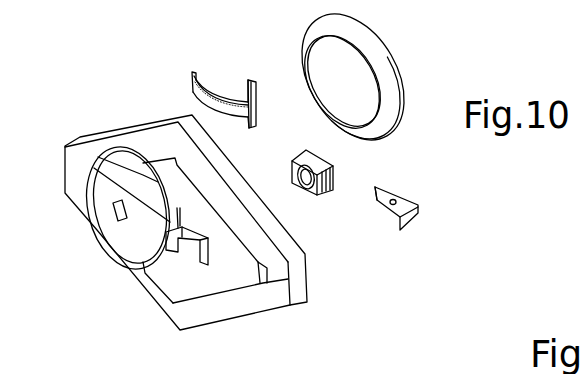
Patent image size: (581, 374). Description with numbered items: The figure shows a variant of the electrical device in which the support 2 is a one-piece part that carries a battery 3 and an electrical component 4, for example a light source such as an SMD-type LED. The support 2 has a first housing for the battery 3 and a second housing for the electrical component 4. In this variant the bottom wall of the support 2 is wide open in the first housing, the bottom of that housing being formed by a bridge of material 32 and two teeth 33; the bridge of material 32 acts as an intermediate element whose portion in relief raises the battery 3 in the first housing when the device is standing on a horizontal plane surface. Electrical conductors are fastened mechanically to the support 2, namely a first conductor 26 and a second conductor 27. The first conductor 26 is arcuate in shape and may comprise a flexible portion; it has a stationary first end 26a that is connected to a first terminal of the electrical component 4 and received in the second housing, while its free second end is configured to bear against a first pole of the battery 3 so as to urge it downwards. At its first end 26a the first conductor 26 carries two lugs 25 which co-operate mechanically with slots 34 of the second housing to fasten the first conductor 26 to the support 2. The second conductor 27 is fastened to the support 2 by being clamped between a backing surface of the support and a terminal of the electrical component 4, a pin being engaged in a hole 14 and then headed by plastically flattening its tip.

The support 2 is at (304, 283).
The battery 3 is at (380, 63).
The electrical component 4 is at (333, 180).
The hole 14 is at (393, 199).
The lugs 25 is at (247, 78).
The first conductor 26 is at (192, 88).
The first end 26a is at (257, 100).
The second conductor 27 is at (407, 218).
The bridge of material 32 is at (108, 168).
The teeth 33 is at (105, 160).
The slots 34 is at (182, 216).